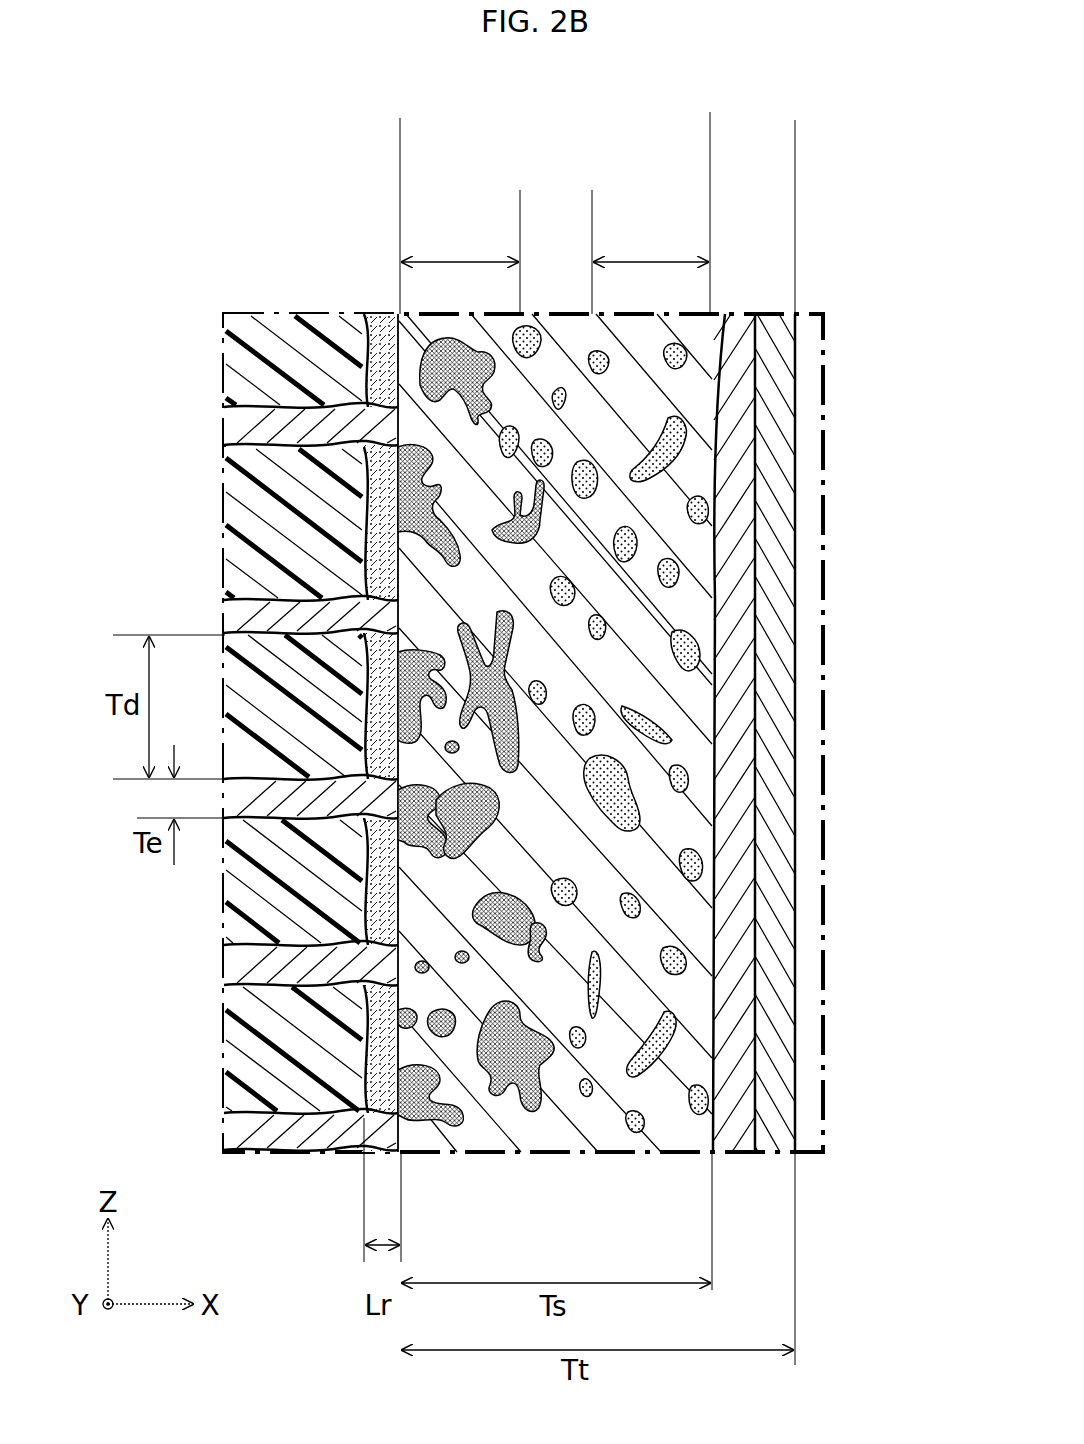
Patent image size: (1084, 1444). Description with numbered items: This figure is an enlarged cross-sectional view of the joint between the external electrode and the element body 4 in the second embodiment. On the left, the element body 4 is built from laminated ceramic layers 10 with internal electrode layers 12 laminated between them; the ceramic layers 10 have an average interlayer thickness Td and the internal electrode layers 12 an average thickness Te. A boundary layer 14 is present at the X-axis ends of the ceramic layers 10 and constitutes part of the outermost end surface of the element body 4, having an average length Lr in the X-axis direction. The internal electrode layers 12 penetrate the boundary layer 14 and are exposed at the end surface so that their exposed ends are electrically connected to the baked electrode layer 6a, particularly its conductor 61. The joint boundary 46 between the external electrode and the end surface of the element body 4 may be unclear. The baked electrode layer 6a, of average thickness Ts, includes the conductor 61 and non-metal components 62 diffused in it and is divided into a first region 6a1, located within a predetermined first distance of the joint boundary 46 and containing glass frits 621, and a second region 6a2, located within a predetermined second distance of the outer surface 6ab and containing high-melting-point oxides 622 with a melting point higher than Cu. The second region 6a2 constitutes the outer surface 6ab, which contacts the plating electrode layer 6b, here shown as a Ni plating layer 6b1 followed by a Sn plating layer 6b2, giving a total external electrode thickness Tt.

The element body 4 is at (257, 312).
The ceramic layers 10 is at (262, 514).
The internal electrode layers 12 is at (263, 426).
The boundary layer 14 is at (375, 1080).
The joint boundary 46 is at (410, 1018).
The conductor 61 is at (683, 822).
The non-metal components 62 is at (611, 730).
The glass frits 621 is at (420, 353).
The high-melting-point oxides 622 is at (686, 650).
The baked electrode layer 6a is at (613, 665).
The first region 6a1 is at (520, 207).
The second region 6a2 is at (651, 230).
The plating electrode layer 6b is at (822, 608).
The Ni plating layer 6b1 is at (740, 572).
The Sn plating layer 6b2 is at (782, 490).
The outer surface 6ab is at (720, 940).